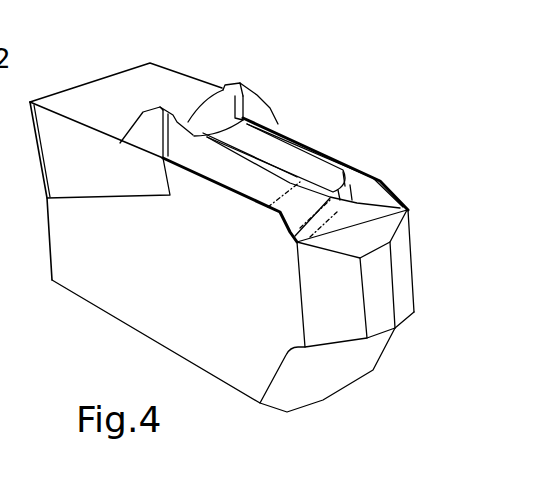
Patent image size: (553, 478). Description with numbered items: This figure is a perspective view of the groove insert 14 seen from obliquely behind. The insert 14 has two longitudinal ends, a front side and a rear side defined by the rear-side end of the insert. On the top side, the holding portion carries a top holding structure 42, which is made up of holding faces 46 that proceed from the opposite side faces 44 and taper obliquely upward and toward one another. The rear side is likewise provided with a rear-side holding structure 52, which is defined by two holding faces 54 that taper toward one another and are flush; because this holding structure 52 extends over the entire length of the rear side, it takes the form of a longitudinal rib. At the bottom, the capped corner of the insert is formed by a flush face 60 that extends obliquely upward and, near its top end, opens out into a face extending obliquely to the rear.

The insert 14 is at (91, 272).
The top holding structure 42 is at (302, 132).
The side faces 44 is at (178, 313).
The holding faces 46 is at (342, 157).
The rear-side holding structure 52 is at (412, 307).
The holding faces 54 is at (315, 308).
The flush face 60 is at (353, 362).